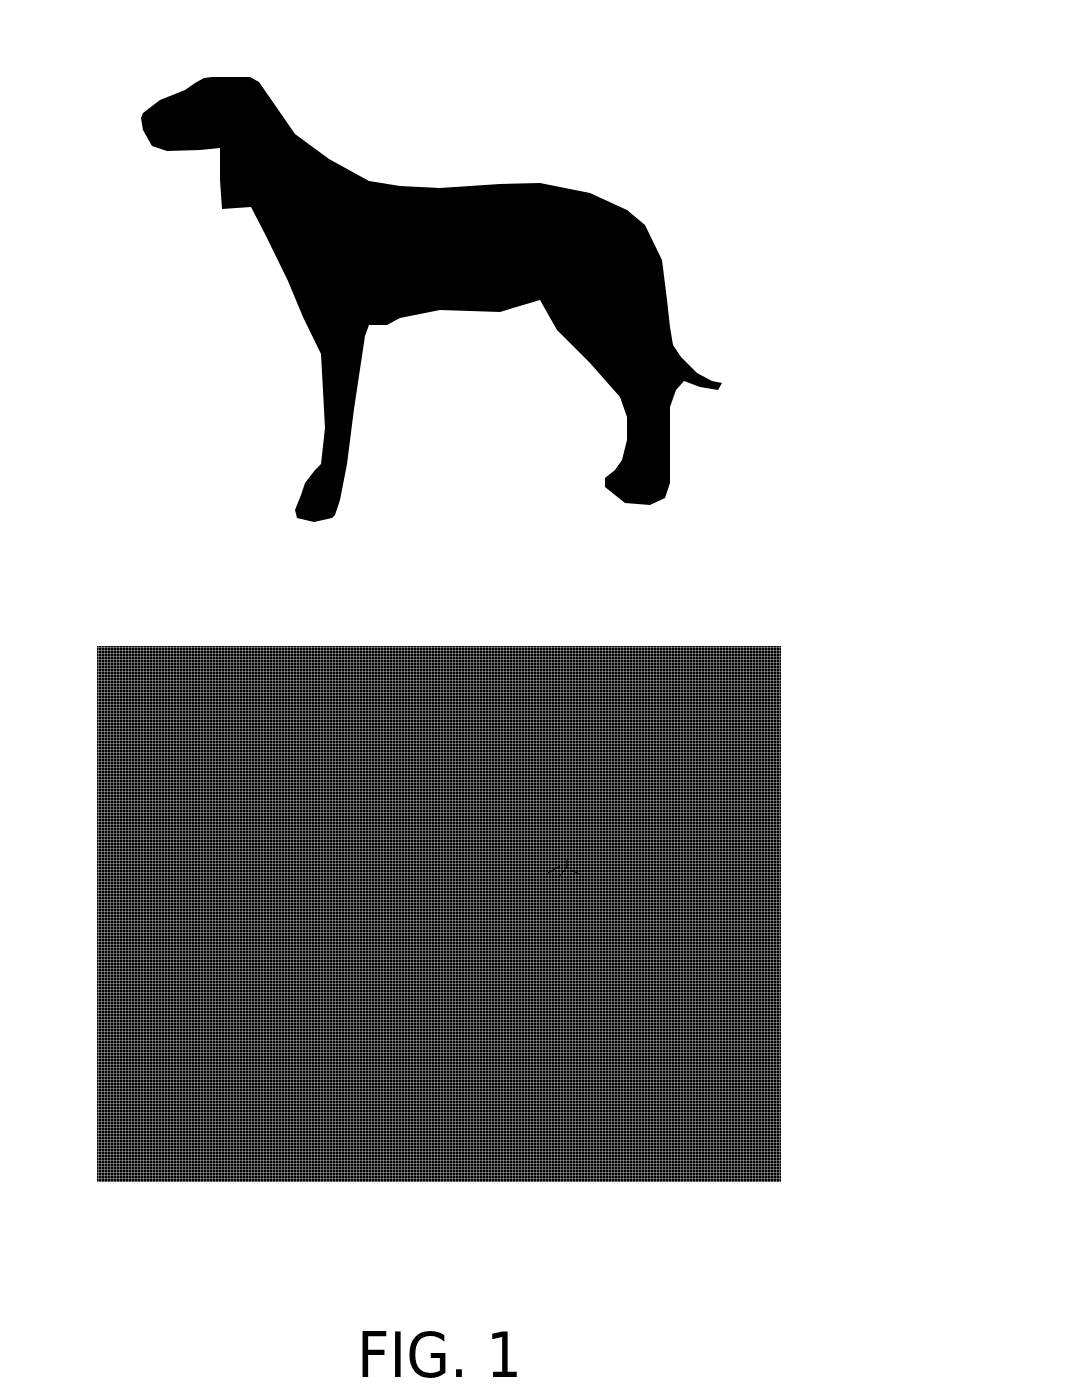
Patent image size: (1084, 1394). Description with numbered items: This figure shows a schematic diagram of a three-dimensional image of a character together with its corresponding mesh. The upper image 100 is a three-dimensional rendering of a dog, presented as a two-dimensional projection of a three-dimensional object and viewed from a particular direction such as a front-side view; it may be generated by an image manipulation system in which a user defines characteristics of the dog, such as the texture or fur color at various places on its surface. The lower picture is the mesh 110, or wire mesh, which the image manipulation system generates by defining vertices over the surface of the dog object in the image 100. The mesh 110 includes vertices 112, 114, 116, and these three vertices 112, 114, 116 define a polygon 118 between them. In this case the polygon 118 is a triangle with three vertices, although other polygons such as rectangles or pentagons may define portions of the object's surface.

The image 100 is at (674, 36).
The mesh 110 is at (675, 641).
The vertex 112 is at (570, 870).
The vertex 114 is at (548, 873).
The vertex 116 is at (567, 860).
The polygon 118 is at (567, 867).